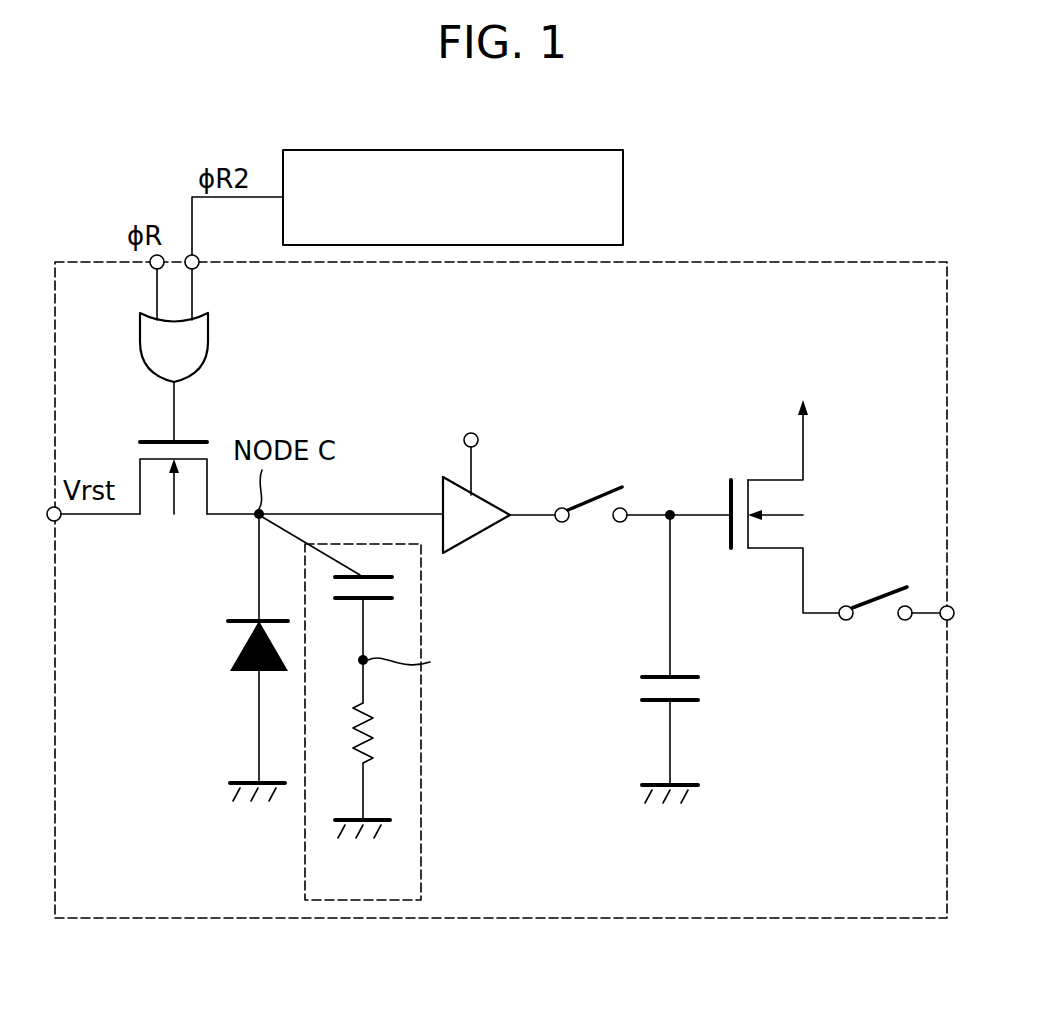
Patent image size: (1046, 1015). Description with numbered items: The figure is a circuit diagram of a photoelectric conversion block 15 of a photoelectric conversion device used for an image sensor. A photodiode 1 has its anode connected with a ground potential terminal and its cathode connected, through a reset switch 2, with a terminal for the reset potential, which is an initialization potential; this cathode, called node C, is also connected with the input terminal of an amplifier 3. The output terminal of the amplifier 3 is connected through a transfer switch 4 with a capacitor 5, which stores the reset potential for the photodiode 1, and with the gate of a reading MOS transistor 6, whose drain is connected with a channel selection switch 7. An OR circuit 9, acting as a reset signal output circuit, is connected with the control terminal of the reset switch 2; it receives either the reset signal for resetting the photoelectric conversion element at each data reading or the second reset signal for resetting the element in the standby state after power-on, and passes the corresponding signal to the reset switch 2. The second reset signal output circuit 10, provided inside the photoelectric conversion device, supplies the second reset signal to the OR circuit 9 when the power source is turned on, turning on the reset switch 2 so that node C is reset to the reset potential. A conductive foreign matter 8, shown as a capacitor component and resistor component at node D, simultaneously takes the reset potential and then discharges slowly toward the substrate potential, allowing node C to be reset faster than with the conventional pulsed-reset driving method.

The photodiode 1 is at (231, 662).
The reset switch 2 is at (156, 525).
The amplifier 3 is at (498, 525).
The transfer switch 4 is at (592, 527).
The capacitor 5 is at (685, 703).
The reading MOS transistor 6 is at (764, 478).
The channel selection switch 7 is at (875, 625).
The conductive foreign matter 8 is at (421, 740).
The OR circuit 9 is at (208, 340).
The second reset signal output circuit 10 is at (623, 198).
The photoelectric conversion block 15 is at (497, 918).